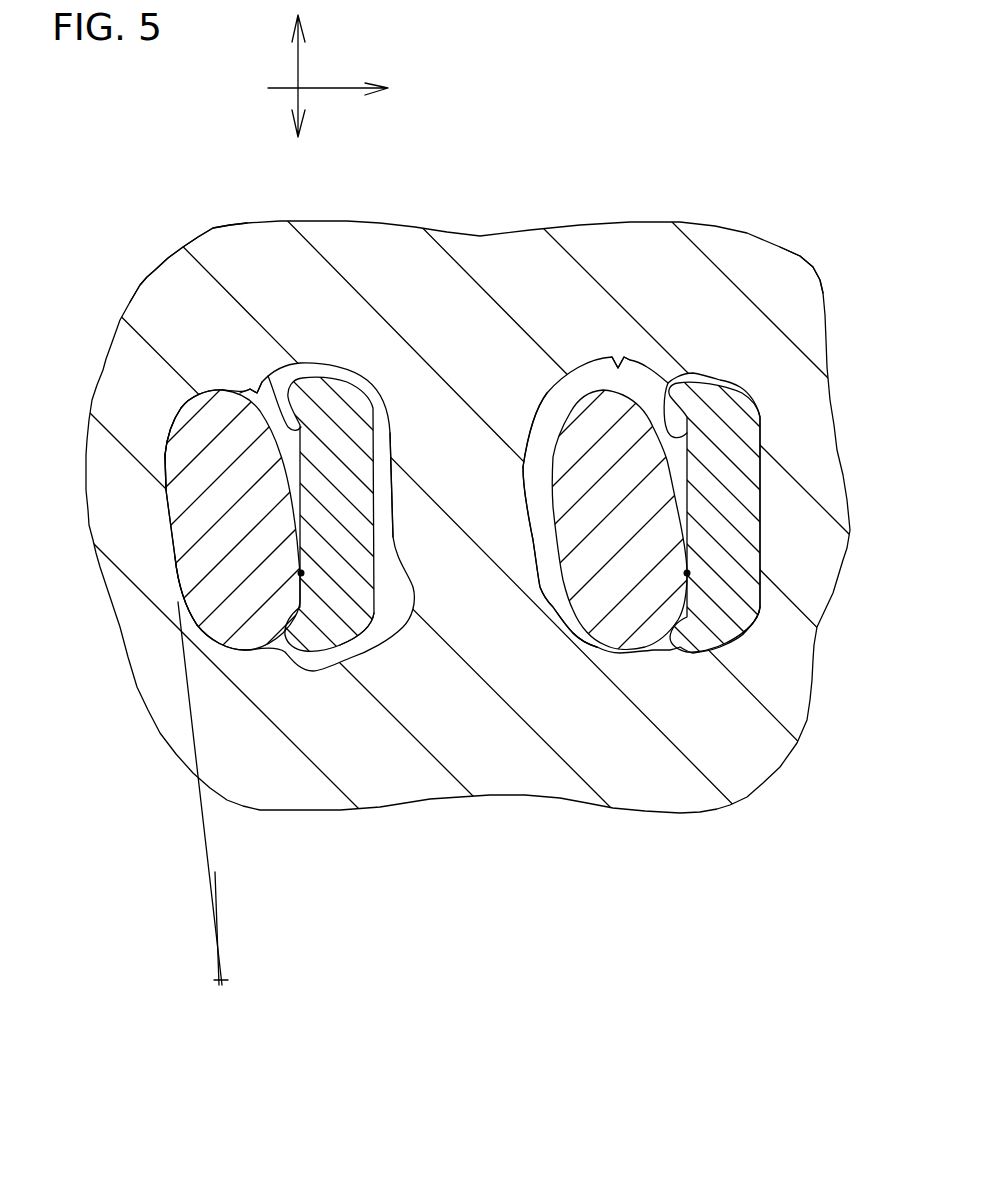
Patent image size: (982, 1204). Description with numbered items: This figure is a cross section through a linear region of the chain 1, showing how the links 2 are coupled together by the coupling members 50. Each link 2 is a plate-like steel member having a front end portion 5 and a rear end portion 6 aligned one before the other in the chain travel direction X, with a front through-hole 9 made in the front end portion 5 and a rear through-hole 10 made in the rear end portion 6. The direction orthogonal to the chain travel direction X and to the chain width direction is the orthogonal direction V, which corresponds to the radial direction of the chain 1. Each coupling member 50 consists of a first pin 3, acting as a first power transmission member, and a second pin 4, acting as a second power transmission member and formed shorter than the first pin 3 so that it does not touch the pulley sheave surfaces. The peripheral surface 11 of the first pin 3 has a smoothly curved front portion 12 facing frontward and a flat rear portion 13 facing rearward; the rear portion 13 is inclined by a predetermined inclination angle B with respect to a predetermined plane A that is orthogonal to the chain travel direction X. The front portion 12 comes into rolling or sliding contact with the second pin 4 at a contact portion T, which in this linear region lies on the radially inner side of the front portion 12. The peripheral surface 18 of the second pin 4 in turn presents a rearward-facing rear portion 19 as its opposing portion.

The chain 1 is at (757, 177).
The link 2 is at (565, 224).
The first pin 3 is at (238, 652).
The second pin 4 is at (376, 650).
The front end portion 5 is at (789, 248).
The rear end portion 6 is at (163, 264).
The front through-hole 9 is at (620, 362).
The rear through-hole 10 is at (250, 390).
The peripheral surface 11 is at (175, 430).
The front portion 12 is at (291, 471).
The rear portion 13 is at (172, 539).
The peripheral surface 18 is at (377, 431).
The rear portion 19 is at (277, 370).
The coupling member 50 is at (169, 616).
The contact portion T is at (301, 573).
The predetermined plane A is at (224, 962).
The inclination angle B is at (217, 988).
The orthogonal direction V is at (300, 67).
The chain travel direction X is at (333, 90).